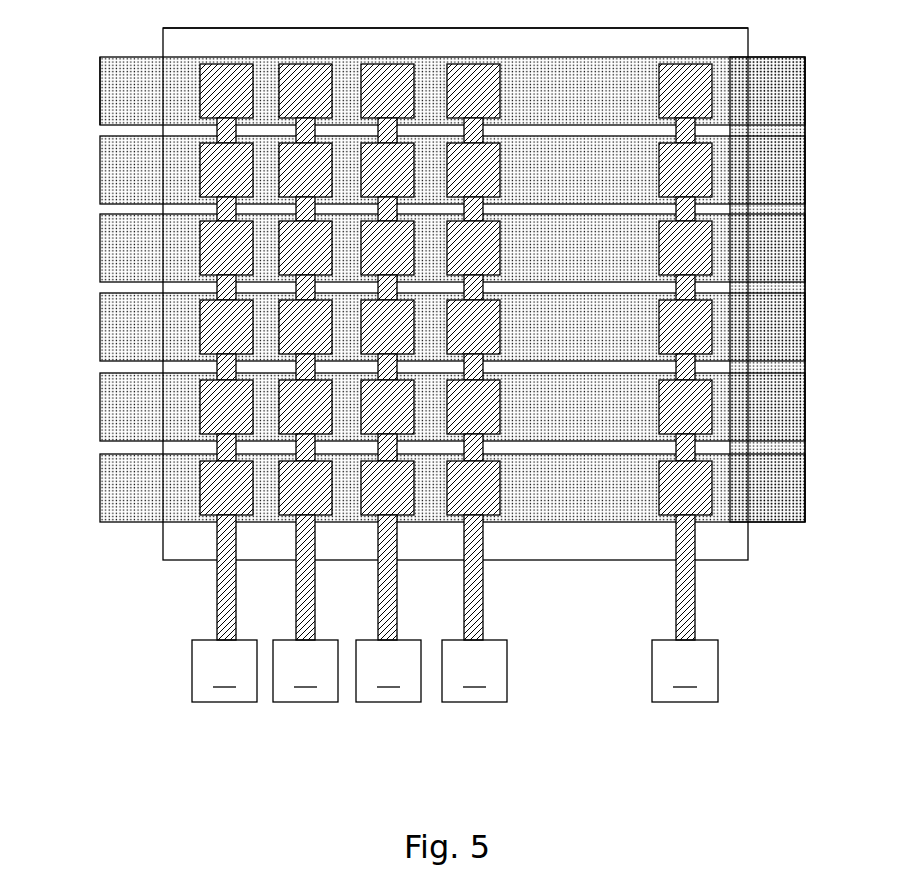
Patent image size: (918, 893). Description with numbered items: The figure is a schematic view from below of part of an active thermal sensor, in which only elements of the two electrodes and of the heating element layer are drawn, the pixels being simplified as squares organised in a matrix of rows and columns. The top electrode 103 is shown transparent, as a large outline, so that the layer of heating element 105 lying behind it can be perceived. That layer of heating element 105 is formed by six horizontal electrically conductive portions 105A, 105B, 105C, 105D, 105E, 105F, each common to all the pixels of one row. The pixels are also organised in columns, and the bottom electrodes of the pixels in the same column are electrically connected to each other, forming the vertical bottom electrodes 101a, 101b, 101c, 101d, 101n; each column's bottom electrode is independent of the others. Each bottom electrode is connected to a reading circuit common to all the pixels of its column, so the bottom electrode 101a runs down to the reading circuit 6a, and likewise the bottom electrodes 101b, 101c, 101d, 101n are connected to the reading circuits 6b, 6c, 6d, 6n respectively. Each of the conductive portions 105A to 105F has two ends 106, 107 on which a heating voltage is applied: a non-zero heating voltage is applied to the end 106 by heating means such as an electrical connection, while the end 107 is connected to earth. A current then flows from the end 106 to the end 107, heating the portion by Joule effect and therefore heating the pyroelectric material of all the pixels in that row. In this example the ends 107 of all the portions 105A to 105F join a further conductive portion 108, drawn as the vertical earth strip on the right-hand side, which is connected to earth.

The top electrode 103 is at (750, 44).
The layer of heating element 105 is at (808, 184).
The electrically conductive portion 105A is at (100, 95).
The electrically conductive portion 105B is at (100, 174).
The electrically conductive portion 105C is at (100, 252).
The electrically conductive portion 105D is at (100, 331).
The electrically conductive portion 105E is at (100, 411).
The electrically conductive portion 105F is at (100, 492).
The end of heating portion 106 is at (100, 57).
The end of heating portion 107 is at (741, 55).
The conductive portion 108 is at (805, 112).
The bottom electrode 101a is at (246, 621).
The bottom electrode 101b is at (315, 627).
The bottom electrode 101c is at (397, 627).
The bottom electrode 101d is at (483, 627).
The bottom electrode 101n is at (695, 610).
The reading circuit 6a is at (224, 671).
The reading circuit 6b is at (305, 671).
The reading circuit 6c is at (388, 671).
The reading circuit 6d is at (474, 671).
The reading circuit 6n is at (685, 671).